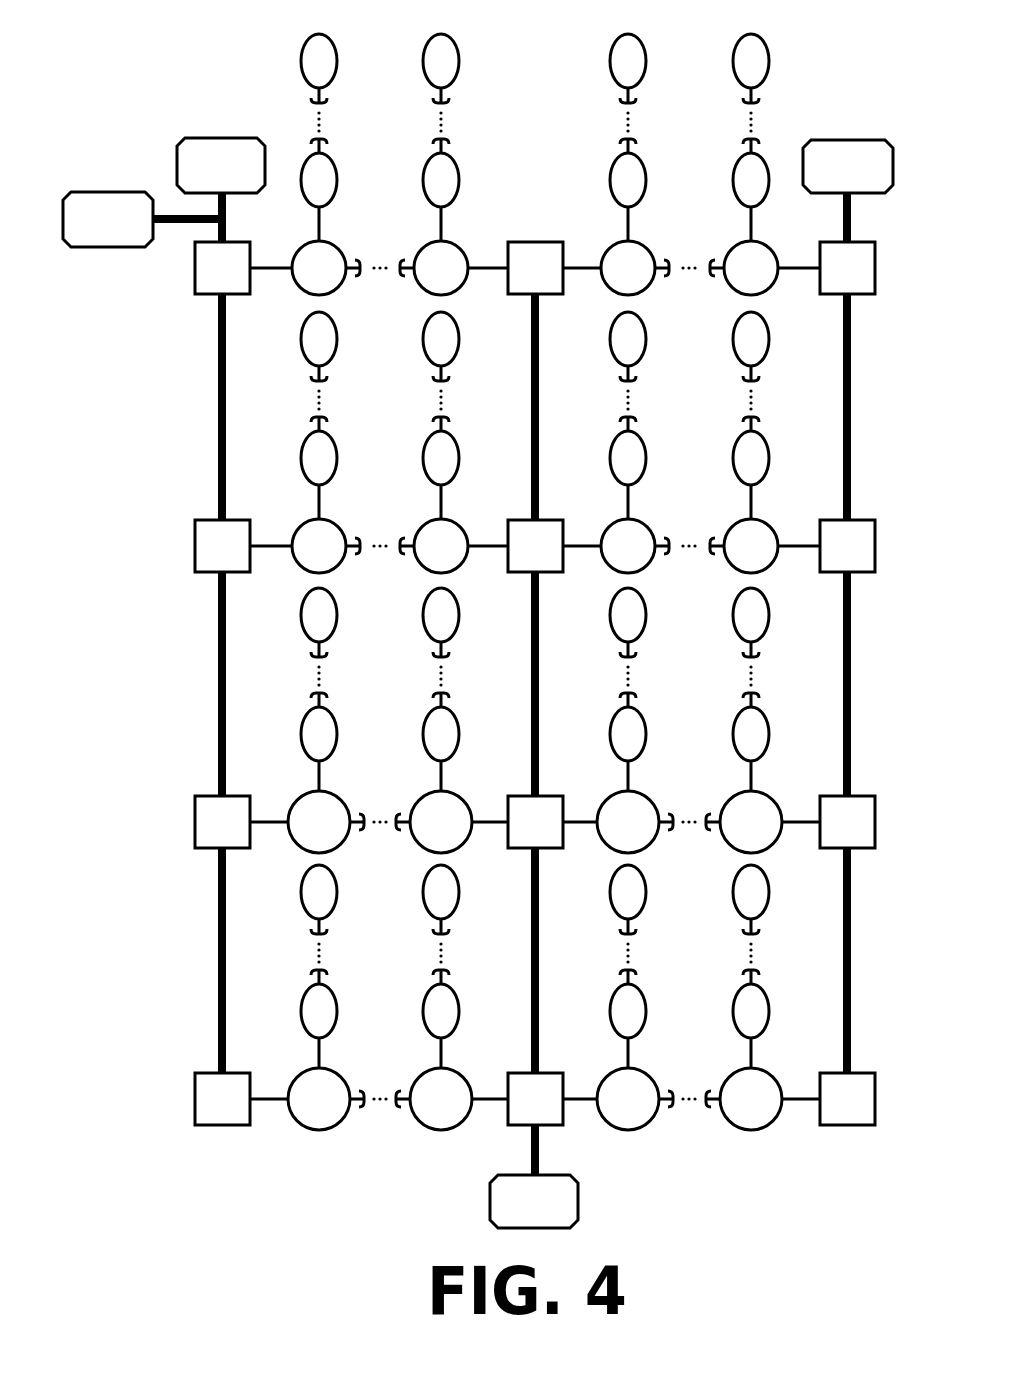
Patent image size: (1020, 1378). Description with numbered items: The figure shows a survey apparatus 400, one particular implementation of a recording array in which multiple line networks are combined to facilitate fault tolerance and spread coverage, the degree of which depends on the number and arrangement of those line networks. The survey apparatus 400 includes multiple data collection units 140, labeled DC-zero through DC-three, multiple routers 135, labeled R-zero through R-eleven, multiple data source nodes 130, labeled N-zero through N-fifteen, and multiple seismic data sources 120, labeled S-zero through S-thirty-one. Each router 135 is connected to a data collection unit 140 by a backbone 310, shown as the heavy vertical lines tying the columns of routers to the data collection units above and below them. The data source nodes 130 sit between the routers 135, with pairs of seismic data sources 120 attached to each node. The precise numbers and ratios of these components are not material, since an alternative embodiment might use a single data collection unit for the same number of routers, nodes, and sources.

The survey apparatus 400 is at (160, 25).
The seismic data source 120 is at (335, 177).
The data source node 130 is at (335, 245).
The router 135 is at (195, 298).
The data collection unit 140 is at (105, 189).
The backbone 310 is at (227, 683).